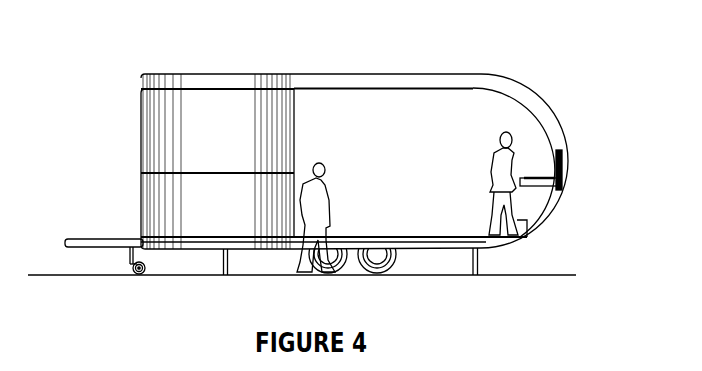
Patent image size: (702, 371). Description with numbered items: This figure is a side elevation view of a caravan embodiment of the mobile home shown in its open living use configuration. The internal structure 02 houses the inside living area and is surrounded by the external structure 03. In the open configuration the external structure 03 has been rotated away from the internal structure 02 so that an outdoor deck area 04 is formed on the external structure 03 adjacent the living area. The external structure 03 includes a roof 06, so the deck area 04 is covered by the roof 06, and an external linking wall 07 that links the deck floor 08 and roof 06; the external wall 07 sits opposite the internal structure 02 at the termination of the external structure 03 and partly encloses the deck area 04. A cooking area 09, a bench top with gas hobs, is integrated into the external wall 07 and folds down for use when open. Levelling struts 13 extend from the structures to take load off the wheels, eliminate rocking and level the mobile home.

The internal structure 02 is at (157, 122).
The external structure 03 is at (534, 99).
The deck area 04 is at (412, 100).
The roof 06 is at (315, 73).
The external linking wall 07 is at (536, 223).
The deck floor 08 is at (375, 235).
The cooking area 09 is at (532, 161).
The levelling strut 13 is at (225, 279).